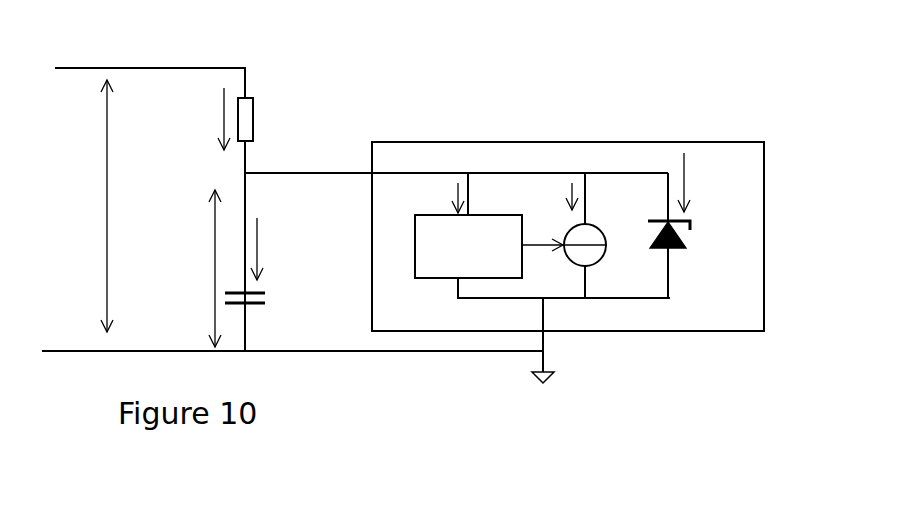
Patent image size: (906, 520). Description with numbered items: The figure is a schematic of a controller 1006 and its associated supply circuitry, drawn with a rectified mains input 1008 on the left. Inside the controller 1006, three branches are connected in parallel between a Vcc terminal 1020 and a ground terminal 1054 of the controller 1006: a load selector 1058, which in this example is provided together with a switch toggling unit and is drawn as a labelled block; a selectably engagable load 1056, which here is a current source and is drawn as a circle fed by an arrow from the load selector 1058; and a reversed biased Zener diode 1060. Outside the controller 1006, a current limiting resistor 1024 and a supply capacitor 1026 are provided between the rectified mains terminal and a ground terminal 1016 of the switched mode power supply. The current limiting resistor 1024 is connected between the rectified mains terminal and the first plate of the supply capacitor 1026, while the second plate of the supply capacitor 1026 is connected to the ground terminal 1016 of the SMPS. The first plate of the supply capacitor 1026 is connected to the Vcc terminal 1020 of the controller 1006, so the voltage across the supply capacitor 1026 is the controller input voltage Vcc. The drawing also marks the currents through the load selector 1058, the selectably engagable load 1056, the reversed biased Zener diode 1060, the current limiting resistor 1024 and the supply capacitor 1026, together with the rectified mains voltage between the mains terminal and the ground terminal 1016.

The mains supply 1008 is at (76, 58).
The current limiting resistor 1024 is at (254, 98).
The Vcc terminal 1020 is at (372, 173).
The supply capacitor 1026 is at (266, 306).
The controller 1006 is at (568, 141).
The load selector 1058 is at (497, 264).
The selectably engagable load 1056 is at (597, 265).
The reversed biased Zener diode 1060 is at (686, 248).
The ground terminal of the controller 1054 is at (543, 331).
The ground terminal of the SMPS 1016 is at (530, 373).